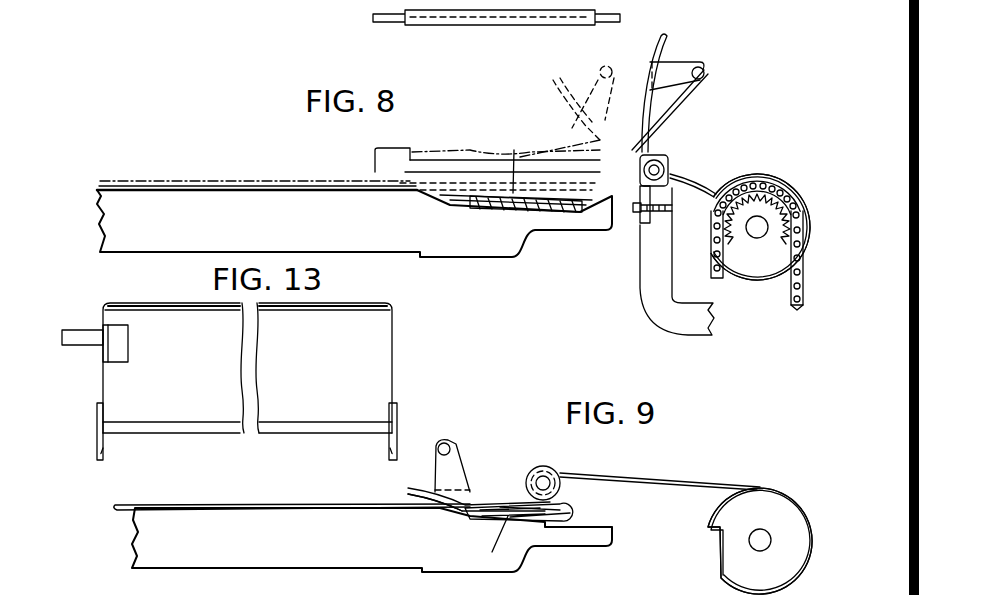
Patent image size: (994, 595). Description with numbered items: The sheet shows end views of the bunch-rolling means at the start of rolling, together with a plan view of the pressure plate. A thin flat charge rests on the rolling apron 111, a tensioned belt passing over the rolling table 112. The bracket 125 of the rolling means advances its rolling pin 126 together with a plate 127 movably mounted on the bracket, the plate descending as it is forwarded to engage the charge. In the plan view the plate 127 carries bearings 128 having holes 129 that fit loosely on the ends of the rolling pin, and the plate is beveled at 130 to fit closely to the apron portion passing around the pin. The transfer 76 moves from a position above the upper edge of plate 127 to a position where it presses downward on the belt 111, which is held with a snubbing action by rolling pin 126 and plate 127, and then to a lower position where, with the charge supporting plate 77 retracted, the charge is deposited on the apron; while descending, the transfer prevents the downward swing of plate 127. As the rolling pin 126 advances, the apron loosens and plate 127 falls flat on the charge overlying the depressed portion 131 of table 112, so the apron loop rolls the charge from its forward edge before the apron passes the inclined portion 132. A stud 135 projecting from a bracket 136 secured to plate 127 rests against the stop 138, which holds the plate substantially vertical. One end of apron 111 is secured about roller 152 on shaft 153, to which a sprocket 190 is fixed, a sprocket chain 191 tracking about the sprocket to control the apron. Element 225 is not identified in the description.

In FIG. 8, the transfer 76 is at (533, 29).
In FIG. 8, the charge supporting plate 77 is at (612, 22).
In FIG. 8, the rolling apron 111 is at (97, 189).
In FIG. 9, the rolling apron 111 is at (118, 506).
In FIG. 8, the rolling table 112 is at (118, 233).
In FIG. 9, the rolling table 112 is at (148, 552).
In FIG. 8, the bracket 125 is at (640, 300).
In FIG. 8, the rolling pin 126 is at (668, 148).
In FIG. 8, the plate 127 is at (553, 96).
In FIG. 13, the plate 127 is at (372, 358).
In FIG. 9, the plate 127 is at (408, 490).
In FIG. 13, the bearings 128 is at (97, 432).
In FIG. 9, the bearings 128 is at (538, 467).
In FIG. 13, the holes 129 is at (103, 451).
In FIG. 13, the bevel 130 is at (258, 432).
In FIG. 9, the bevel 130 is at (528, 480).
In FIG. 9, the depressed portion 131 is at (592, 524).
In FIG. 9, the inclined portion 132 is at (432, 513).
In FIG. 8, the stud 135 is at (703, 68).
In FIG. 13, the stud 135 is at (75, 332).
In FIG. 8, the bracket 136 is at (677, 76).
In FIG. 13, the bracket 136 is at (110, 358).
In FIG. 9, the bracket 136 is at (455, 462).
In FIG. 8, the stop 138 is at (692, 92).
In FIG. 8, the roller 152 is at (716, 203).
In FIG. 9, the roller 152 is at (735, 542).
In FIG. 8, the shaft 153 is at (759, 225).
In FIG. 9, the shaft 153 is at (760, 539).
In FIG. 8, the sprocket 190 is at (771, 195).
In FIG. 8, the sprocket chain 191 is at (805, 309).
In FIG. 8, the guide block 225 is at (634, 212).